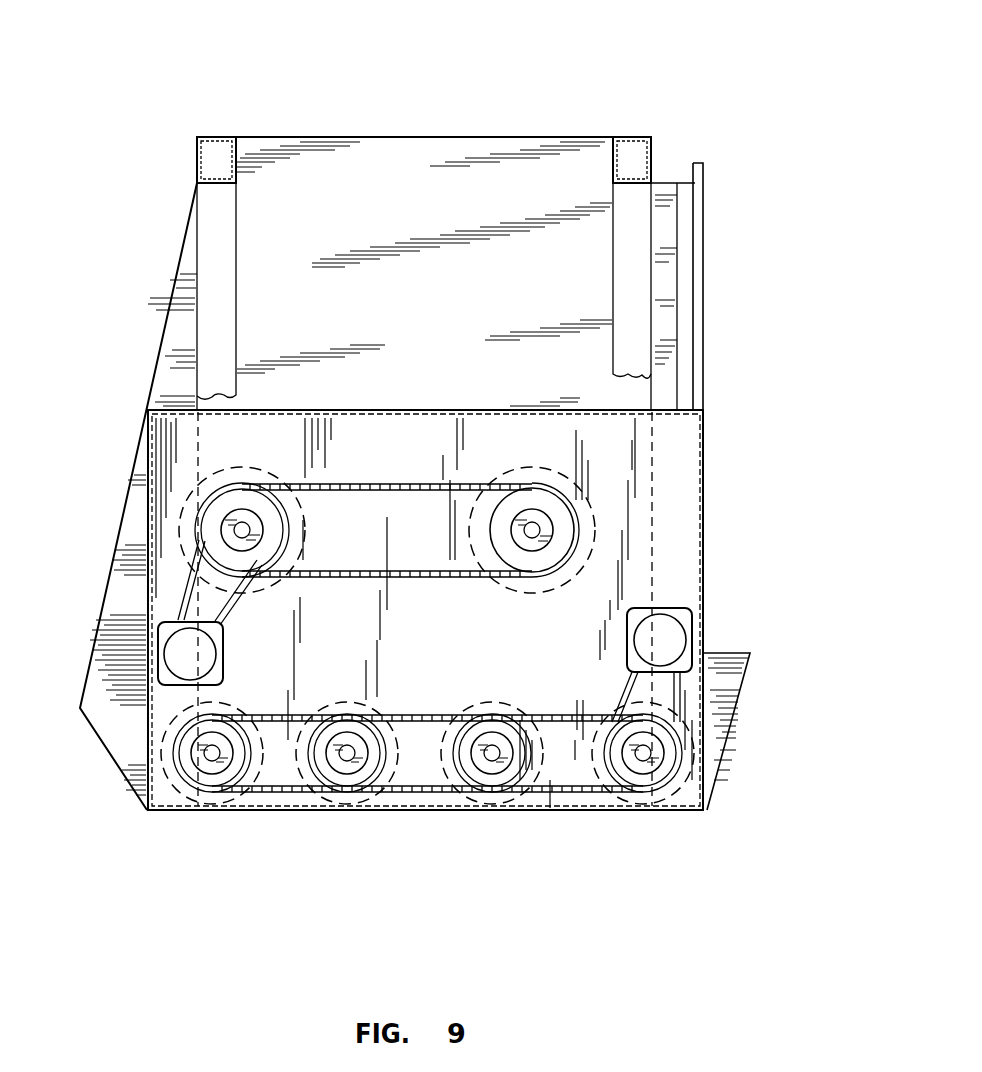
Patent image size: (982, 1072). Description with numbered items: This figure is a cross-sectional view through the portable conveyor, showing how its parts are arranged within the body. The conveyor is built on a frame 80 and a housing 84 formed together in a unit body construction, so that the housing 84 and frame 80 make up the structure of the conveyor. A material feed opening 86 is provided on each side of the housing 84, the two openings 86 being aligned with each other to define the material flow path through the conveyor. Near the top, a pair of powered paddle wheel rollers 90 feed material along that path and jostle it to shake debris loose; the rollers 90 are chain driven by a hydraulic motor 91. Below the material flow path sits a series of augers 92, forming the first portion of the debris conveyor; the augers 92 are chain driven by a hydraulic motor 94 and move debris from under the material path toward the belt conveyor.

The frame 80 is at (219, 134).
The housing 84 is at (355, 187).
The material feed opening 86 is at (128, 309).
The powered paddle wheel rollers 90 is at (313, 517).
The hydraulic motor 91 is at (178, 655).
The augers 92 is at (232, 710).
The hydraulic motor 94 is at (666, 636).